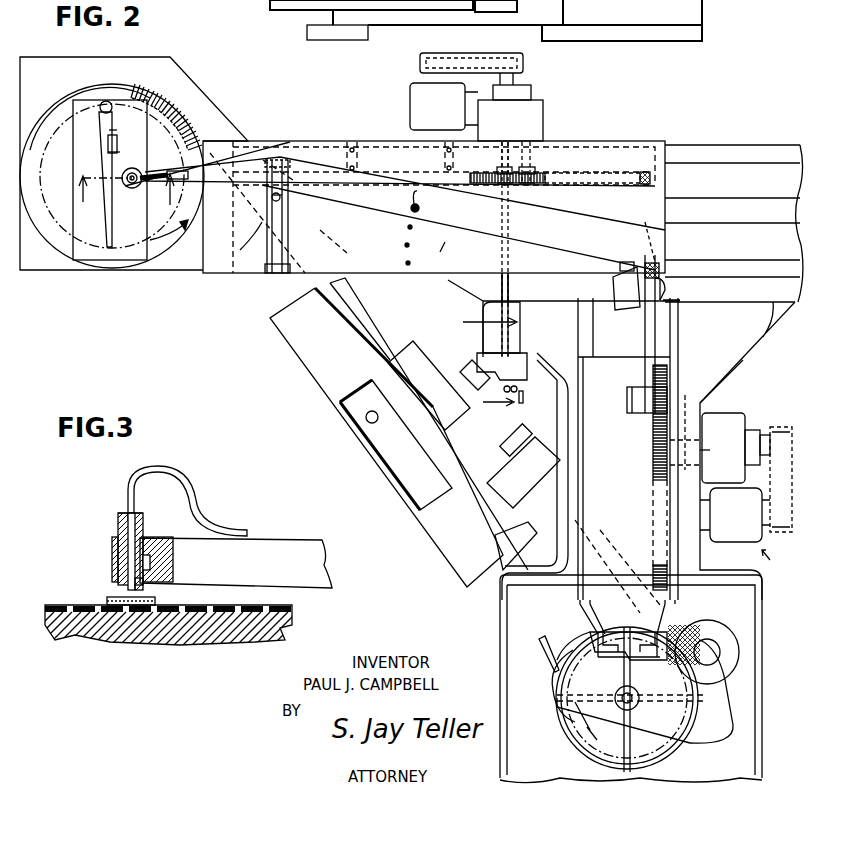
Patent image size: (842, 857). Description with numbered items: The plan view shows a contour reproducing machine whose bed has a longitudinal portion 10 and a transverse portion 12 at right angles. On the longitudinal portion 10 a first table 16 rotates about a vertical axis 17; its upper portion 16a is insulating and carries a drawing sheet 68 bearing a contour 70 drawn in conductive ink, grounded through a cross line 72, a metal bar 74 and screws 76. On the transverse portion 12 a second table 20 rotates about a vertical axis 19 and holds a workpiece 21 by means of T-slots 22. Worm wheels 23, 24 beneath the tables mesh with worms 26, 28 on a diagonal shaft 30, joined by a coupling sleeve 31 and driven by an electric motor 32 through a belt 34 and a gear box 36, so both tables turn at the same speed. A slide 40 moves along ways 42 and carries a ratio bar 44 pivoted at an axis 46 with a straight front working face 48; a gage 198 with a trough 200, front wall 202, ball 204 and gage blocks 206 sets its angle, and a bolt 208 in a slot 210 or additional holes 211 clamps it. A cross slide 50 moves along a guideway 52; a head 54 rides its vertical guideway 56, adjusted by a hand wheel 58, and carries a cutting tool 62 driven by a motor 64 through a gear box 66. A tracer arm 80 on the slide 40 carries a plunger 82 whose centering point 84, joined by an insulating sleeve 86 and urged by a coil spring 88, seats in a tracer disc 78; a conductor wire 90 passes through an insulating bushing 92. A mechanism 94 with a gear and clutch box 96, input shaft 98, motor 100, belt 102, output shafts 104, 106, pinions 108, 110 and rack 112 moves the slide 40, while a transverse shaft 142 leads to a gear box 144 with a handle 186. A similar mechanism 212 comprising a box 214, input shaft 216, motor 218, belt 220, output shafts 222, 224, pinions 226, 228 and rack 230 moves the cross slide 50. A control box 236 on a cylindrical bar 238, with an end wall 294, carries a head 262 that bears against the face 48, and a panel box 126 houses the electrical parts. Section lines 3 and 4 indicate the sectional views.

In FIG. 2, the section line 3 is at (133, 207).
In FIG. 2, the section line 4 is at (486, 360).
In FIG. 2, the longitudinal bed portion 10 is at (182, 268).
In FIG. 2, the transverse bed portion 12 is at (705, 552).
In FIG. 2, the first table 16 is at (56, 110).
In FIG. 3, the first table 16 is at (170, 643).
In FIG. 3, the upper table portion 16a is at (205, 606).
In FIG. 2, the vertical axis of first table 17 is at (118, 176).
In FIG. 2, the vertical axis of second table 19 is at (640, 706).
In FIG. 2, the second table 20 is at (665, 760).
In FIG. 2, the workpiece 21 is at (620, 700).
In FIG. 2, the T-slots 22 is at (575, 700).
In FIG. 2, the worm wheel 23 is at (68, 243).
In FIG. 2, the worm wheel 24 is at (577, 740).
In FIG. 2, the worm 26 is at (185, 110).
In FIG. 2, the worm 28 is at (700, 632).
In FIG. 2, the diagonal shaft 30 is at (396, 340).
In FIG. 2, the coupling sleeve 31 is at (425, 368).
In FIG. 2, the electric motor 32 is at (520, 395).
In FIG. 2, the belt 34 is at (505, 435).
In FIG. 2, the gear box 36 is at (505, 490).
In FIG. 2, the slide 40 is at (434, 207).
In FIG. 2, the ways 42 is at (750, 155).
In FIG. 2, the ratio bar 44 is at (510, 275).
In FIG. 2, the vertical axis of ratio bar 46 is at (647, 228).
In FIG. 2, the front working face 48 is at (451, 246).
In FIG. 2, the cross slide 50 is at (617, 566).
In FIG. 2, the guideway 52 is at (590, 320).
In FIG. 2, the head 54 is at (575, 640).
In FIG. 2, the vertical guideway 56 is at (620, 634).
In FIG. 2, the hand wheel 58 is at (543, 639).
In FIG. 2, the cutting tool 62 is at (636, 690).
In FIG. 2, the electric motor 64 is at (718, 640).
In FIG. 2, the gear box 66 is at (712, 735).
In FIG. 2, the drawing sheet 68 is at (95, 100).
In FIG. 2, the contour 70 is at (102, 124).
In FIG. 2, the cross line 72 is at (116, 140).
In FIG. 2, the metal bar 74 is at (113, 131).
In FIG. 2, the screws 76 is at (118, 152).
In FIG. 2, the tracer disc 78 is at (132, 190).
In FIG. 3, the tracer disc 78 is at (107, 600).
In FIG. 2, the tracer arm 80 is at (284, 152).
In FIG. 3, the tracer arm 80 is at (275, 548).
In FIG. 3, the plunger 82 is at (118, 533).
In FIG. 3, the centering point 84 is at (128, 585).
In FIG. 3, the sleeve 86 is at (143, 586).
In FIG. 3, the coil spring 88 is at (112, 558).
In FIG. 2, the conductor wire 90 is at (165, 170).
In FIG. 3, the conductor wire 90 is at (170, 468).
In FIG. 3, the insulating bushing 92 is at (118, 513).
In FIG. 2, the slide moving mechanism 94 is at (479, 86).
In FIG. 2, the gear and clutch box 96 is at (543, 127).
In FIG. 2, the input shaft 98 is at (520, 85).
In FIG. 2, the electric motor 100 is at (410, 96).
In FIG. 2, the belt 102 is at (476, 60).
In FIG. 2, the output shaft 104 is at (500, 158).
In FIG. 2, the output shaft 106 is at (531, 160).
In FIG. 2, the pinion 108 is at (507, 185).
In FIG. 2, the pinion 110 is at (532, 185).
In FIG. 2, the rack 112 is at (555, 175).
In FIG. 2, the panel box 126 is at (290, 345).
In FIG. 2, the transverse shaft 142 is at (500, 298).
In FIG. 2, the gear box 144 is at (512, 360).
In FIG. 2, the handle 186 is at (524, 403).
In FIG. 2, the gage 198 is at (250, 238).
In FIG. 2, the V-shaped trough 200 is at (290, 245).
In FIG. 2, the front wall 202 is at (277, 273).
In FIG. 2, the ball 204 is at (271, 198).
In FIG. 2, the gage blocks 206 is at (285, 218).
In FIG. 2, the bolt 208 is at (412, 231).
In FIG. 2, the slot 210 is at (420, 206).
In FIG. 2, the additional holes 211 is at (407, 263).
In FIG. 2, the cross slide moving mechanism 212 is at (780, 565).
In FIG. 2, the gear and clutch box 214 is at (750, 431).
In FIG. 2, the input shaft 216 is at (762, 430).
In FIG. 2, the electric motor 218 is at (750, 540).
In FIG. 2, the belt 220 is at (792, 532).
In FIG. 2, the output shaft 222 is at (688, 428).
In FIG. 2, the output shaft 224 is at (700, 463).
In FIG. 2, the pinion 226 is at (652, 445).
In FIG. 2, the pinion 228 is at (653, 470).
In FIG. 2, the rack 230 is at (653, 490).
In FIG. 2, the control box 236 is at (613, 282).
In FIG. 2, the cylindrical bar 238 is at (662, 306).
In FIG. 2, the head 262 is at (622, 262).
In FIG. 2, the end wall 294 is at (643, 310).